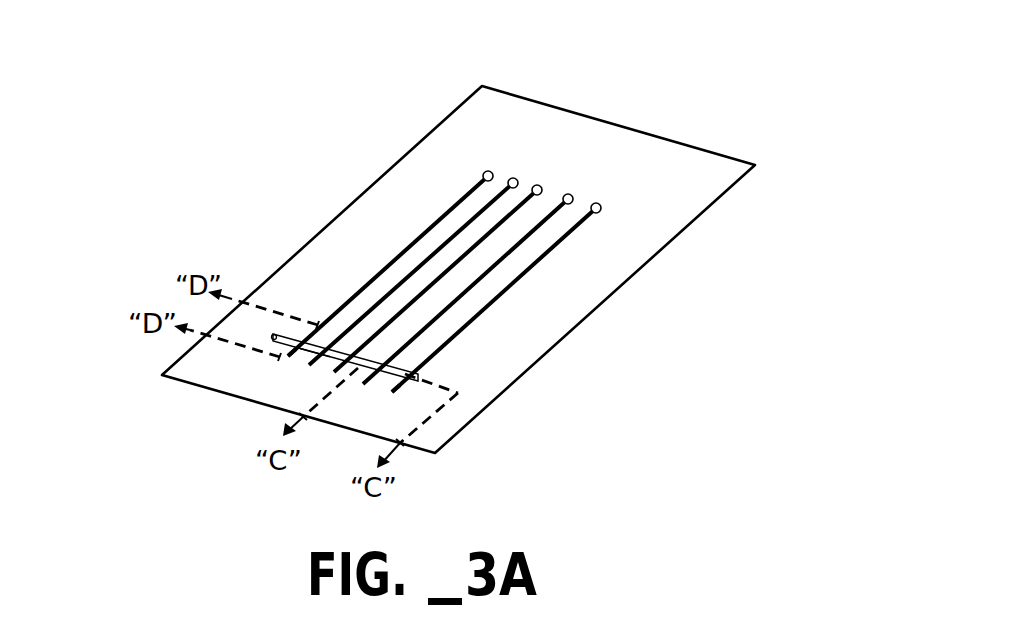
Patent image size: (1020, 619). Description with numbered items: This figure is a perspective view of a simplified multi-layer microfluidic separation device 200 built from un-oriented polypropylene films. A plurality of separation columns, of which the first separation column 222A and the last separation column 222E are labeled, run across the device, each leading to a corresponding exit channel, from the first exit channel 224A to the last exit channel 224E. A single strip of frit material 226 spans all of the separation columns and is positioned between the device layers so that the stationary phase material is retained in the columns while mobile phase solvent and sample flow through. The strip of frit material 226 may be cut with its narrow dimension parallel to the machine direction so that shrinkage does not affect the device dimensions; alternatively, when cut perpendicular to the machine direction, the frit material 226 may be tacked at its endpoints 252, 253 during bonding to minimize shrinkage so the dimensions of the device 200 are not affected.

The multi-layer microfluidic separation device 200 is at (714, 97).
The separation column 222A is at (415, 240).
The separation column 222E is at (473, 320).
The exit channel 224A is at (297, 353).
The exit channel 224E is at (400, 386).
The frit material 226 is at (316, 353).
The endpoint of frit material 252 is at (413, 377).
The endpoint of frit material 253 is at (272, 336).